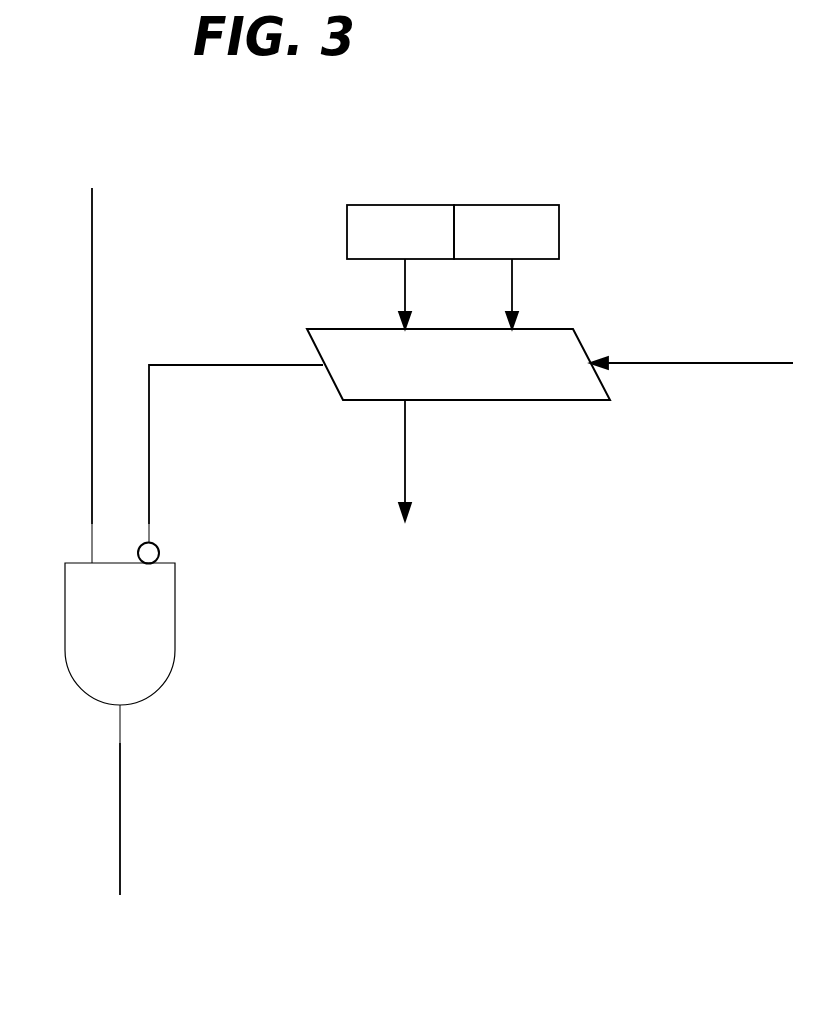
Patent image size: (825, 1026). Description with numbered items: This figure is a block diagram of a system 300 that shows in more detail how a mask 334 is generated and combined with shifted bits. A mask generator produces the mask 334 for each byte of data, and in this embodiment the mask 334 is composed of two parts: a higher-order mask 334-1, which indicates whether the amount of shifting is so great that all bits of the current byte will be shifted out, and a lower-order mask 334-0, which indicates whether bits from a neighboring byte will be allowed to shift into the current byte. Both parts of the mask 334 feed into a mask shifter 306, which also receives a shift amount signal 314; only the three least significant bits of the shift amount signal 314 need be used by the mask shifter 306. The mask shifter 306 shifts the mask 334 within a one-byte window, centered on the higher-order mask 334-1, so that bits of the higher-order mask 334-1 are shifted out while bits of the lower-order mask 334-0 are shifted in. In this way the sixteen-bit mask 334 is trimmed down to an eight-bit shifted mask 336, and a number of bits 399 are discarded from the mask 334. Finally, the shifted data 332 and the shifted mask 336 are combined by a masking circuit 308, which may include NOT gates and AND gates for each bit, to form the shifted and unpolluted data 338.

The system 300 is at (411, 53).
The mask shifter 306 is at (478, 374).
The masking circuit 308 is at (141, 635).
The shift amount signal 314 is at (771, 359).
The shifted data 332 is at (112, 182).
The mask 334 is at (584, 202).
The higher-order mask 334-1 is at (431, 241).
The lower-order mask 334-0 is at (537, 241).
The shifted mask 336 is at (223, 359).
The shifted and unpolluted data 338 is at (143, 930).
The discarded bits 399 is at (426, 552).